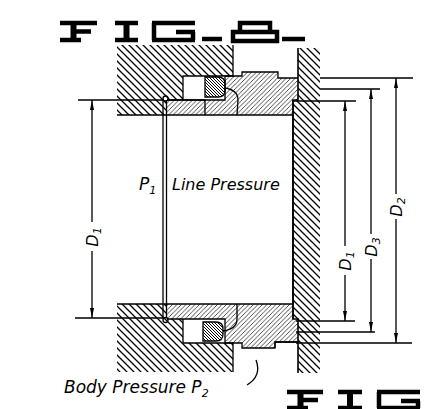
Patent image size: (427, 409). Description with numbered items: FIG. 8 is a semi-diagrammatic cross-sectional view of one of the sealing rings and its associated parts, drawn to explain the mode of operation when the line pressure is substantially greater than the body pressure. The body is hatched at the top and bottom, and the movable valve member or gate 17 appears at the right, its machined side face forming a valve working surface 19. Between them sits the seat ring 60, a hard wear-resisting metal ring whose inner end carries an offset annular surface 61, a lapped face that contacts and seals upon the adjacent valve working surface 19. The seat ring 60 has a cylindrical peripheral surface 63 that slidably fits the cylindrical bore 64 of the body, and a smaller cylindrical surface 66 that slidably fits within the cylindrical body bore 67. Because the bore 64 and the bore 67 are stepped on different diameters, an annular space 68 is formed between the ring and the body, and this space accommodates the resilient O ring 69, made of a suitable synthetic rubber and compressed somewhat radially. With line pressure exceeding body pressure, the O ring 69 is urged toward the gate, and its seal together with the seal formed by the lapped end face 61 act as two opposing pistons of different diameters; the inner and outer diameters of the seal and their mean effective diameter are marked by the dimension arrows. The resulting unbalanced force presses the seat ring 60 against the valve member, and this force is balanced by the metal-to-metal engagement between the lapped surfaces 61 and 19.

The movable valve member or gate 17 is at (296, 235).
The valve working surfaces 19 is at (296, 255).
The seal or seat ring 60 is at (242, 306).
The offset annular surface 61 is at (283, 305).
The cylindrical peripheral surface 63 is at (235, 73).
The cylindrical bore 64 is at (193, 78).
The cylindrical surface 66 is at (184, 106).
The cylindrical body bore 67 is at (165, 98).
The annular space 68 is at (206, 99).
The resilient O ring 69 is at (233, 113).